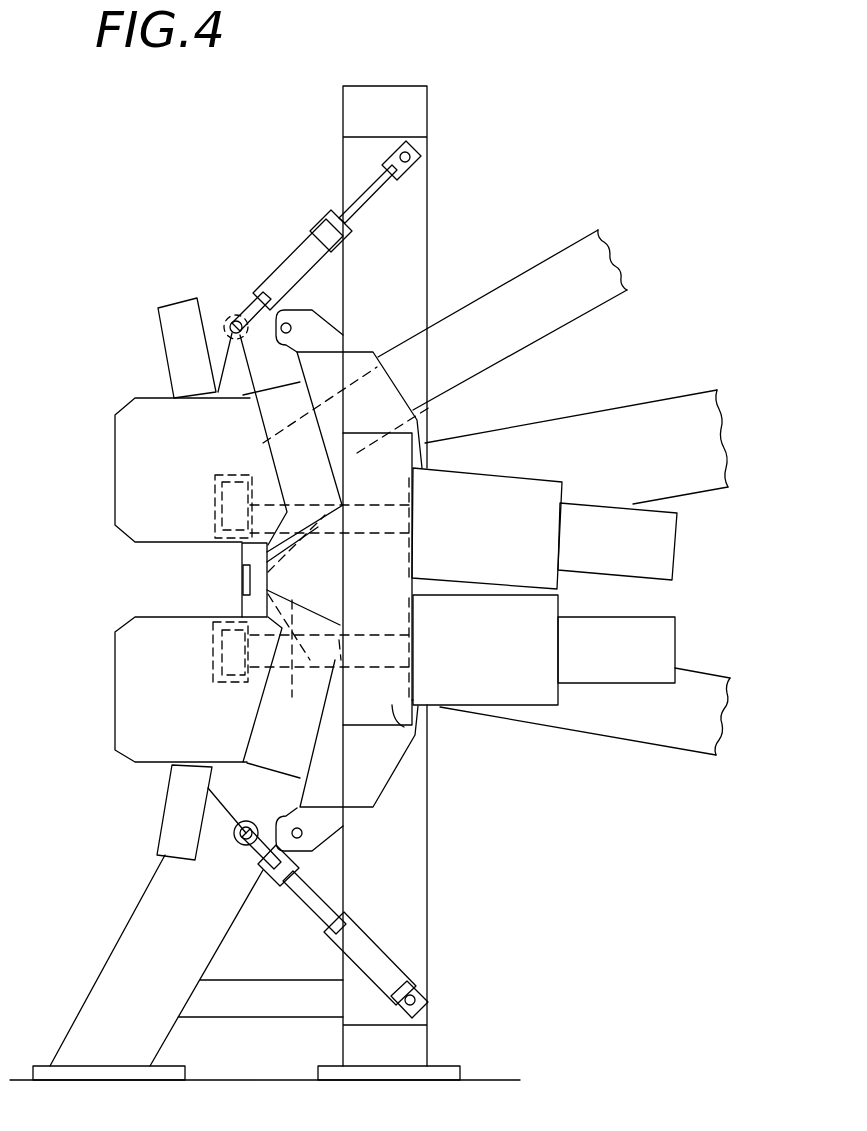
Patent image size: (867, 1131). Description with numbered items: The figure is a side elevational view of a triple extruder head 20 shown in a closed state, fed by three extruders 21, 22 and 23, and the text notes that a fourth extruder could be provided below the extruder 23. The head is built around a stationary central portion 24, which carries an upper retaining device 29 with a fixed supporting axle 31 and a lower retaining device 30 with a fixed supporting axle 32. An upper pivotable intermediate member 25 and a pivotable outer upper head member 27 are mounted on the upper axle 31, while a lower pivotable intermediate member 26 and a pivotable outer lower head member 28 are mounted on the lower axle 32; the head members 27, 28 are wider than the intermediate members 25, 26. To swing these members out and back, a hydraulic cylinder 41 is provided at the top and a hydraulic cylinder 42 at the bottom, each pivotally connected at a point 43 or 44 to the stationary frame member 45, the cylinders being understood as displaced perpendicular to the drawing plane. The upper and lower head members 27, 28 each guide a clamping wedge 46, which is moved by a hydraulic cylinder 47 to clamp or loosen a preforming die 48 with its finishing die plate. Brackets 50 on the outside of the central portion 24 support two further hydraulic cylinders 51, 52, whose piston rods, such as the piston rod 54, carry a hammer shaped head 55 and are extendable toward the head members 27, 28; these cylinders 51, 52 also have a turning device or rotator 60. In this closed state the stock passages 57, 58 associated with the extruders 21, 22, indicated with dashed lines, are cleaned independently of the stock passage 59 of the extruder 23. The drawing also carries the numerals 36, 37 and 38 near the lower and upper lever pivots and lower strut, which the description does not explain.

The triple extruder head 20 is at (232, 199).
The extruder 21 is at (540, 278).
The extruder 22 is at (604, 426).
The extruder 23 is at (637, 718).
The stationary central portion 24 is at (378, 770).
The upper pivotable intermediate member 25 is at (268, 410).
The lower pivotable intermediate member 26 is at (262, 746).
The upper head member 27 is at (130, 453).
The lower head member 28 is at (130, 723).
The upper retaining device 29 is at (318, 341).
The lower retaining device 30 is at (328, 825).
The upper supporting axle 31 is at (302, 322).
The lower supporting axle 32 is at (300, 845).
The lower lever pivot 36 is at (270, 796).
The upper lever pivot 37 is at (216, 357).
The lower strut 38 is at (232, 800).
The upper hydraulic cylinder 41 is at (333, 210).
The lower hydraulic cylinder 42 is at (387, 963).
The pivot point 43 is at (408, 158).
The pivot point 44 is at (418, 991).
The frame member 45 is at (412, 885).
The clamping wedge 46 is at (240, 595).
The hydraulic cylinder 47 is at (178, 334).
The preforming die 48 is at (240, 566).
The bracket 50 is at (404, 727).
The hydraulic cylinder 51 is at (545, 492).
The hydraulic cylinder 52 is at (522, 687).
The piston rod 54 is at (339, 660).
The hammer shaped head 55 is at (220, 657).
The stock passage 57 is at (250, 458).
The stock passage 58 is at (344, 578).
The stock passage 59 is at (292, 660).
The rotator 60 is at (663, 632).